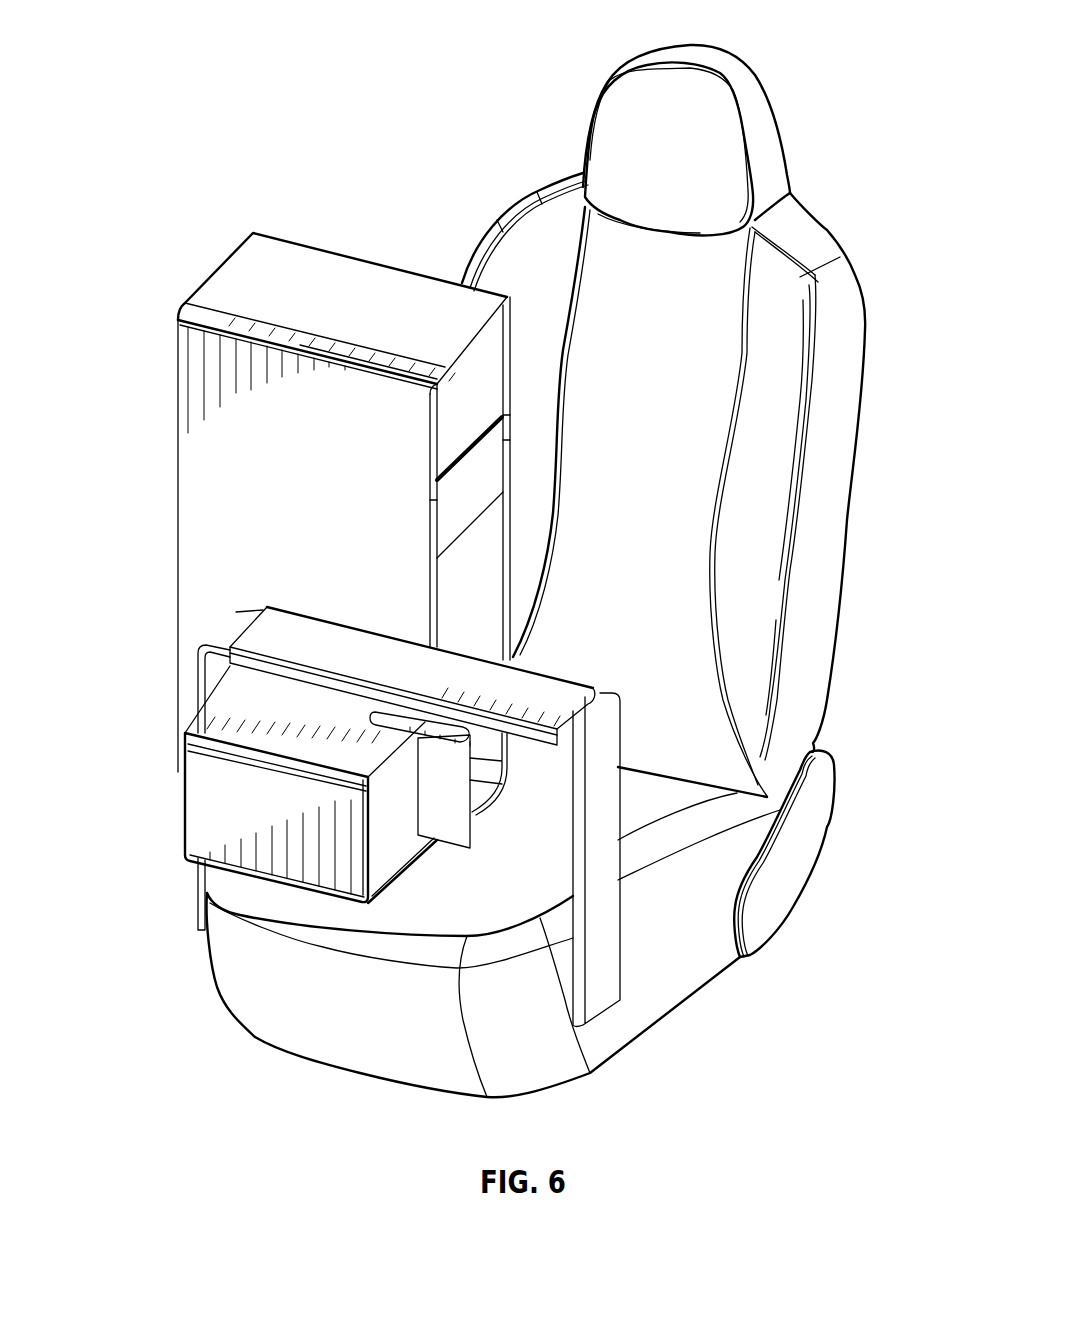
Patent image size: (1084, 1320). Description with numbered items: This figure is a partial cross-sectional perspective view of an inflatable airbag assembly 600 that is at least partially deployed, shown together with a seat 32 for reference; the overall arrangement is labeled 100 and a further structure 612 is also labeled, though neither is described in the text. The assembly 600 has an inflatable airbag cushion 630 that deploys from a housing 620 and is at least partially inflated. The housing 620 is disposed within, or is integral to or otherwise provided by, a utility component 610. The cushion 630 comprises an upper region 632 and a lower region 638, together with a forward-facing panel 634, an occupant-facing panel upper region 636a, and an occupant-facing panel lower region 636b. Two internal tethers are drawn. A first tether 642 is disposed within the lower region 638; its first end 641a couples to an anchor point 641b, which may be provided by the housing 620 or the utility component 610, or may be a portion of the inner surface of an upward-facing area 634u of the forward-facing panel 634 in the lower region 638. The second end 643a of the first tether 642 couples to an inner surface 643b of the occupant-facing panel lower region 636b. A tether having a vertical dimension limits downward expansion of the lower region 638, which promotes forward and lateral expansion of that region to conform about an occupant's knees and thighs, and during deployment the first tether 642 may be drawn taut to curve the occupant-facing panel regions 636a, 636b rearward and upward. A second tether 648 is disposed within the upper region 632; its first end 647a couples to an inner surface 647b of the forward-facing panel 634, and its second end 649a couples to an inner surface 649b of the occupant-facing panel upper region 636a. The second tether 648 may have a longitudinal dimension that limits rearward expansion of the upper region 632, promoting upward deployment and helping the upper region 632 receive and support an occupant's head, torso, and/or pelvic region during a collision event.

The vehicle seat assembly 100 is at (158, 80).
The seat 32 is at (848, 522).
The inflatable airbag assembly 600 is at (168, 646).
The utility component 610 is at (258, 607).
The cross bar 612 is at (360, 650).
The housing 620 is at (360, 680).
The inflatable airbag cushion 630 is at (178, 393).
The upper region 632 is at (215, 267).
The forward-facing panel 634 is at (215, 453).
The upward-facing area 634u is at (245, 686).
The occupant-facing panel upper region 636a is at (437, 413).
The occupant-facing panel lower region 636b is at (380, 895).
The lower region 638 is at (205, 810).
The first end 641a is at (592, 688).
The anchor point 641b is at (433, 730).
The first tether 642 is at (467, 832).
The second end 643a is at (470, 848).
The inner surface 643b is at (405, 842).
The first end 647a is at (437, 530).
The inner surface 647b is at (428, 505).
The second tether 648 is at (484, 504).
The second end 649a is at (502, 443).
The inner surface 649b is at (500, 418).